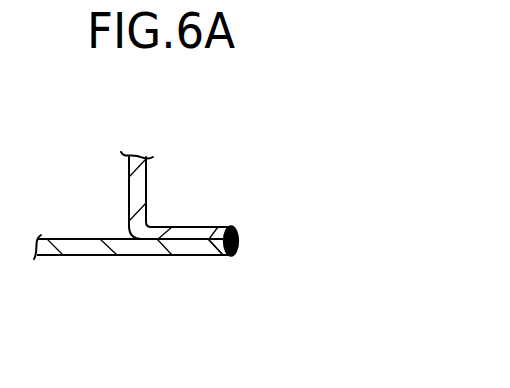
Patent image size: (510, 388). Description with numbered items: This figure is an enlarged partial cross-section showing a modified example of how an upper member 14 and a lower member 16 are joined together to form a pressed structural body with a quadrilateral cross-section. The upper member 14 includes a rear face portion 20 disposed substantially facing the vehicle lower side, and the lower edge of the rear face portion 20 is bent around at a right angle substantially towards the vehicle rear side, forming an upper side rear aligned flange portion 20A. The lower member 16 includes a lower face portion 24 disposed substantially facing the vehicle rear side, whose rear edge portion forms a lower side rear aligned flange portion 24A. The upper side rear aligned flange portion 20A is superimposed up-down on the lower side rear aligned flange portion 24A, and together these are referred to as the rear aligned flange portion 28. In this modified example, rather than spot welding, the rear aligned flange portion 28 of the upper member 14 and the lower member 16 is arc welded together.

The upper member 14 is at (156, 188).
The lower member 16 is at (88, 264).
The rear face portion 20 is at (147, 176).
The upper side rear aligned flange portion 20A is at (191, 231).
The lower face portion 24 is at (111, 253).
The lower side rear aligned flange portion 24A is at (203, 253).
The rear aligned flange portion 28 is at (236, 233).